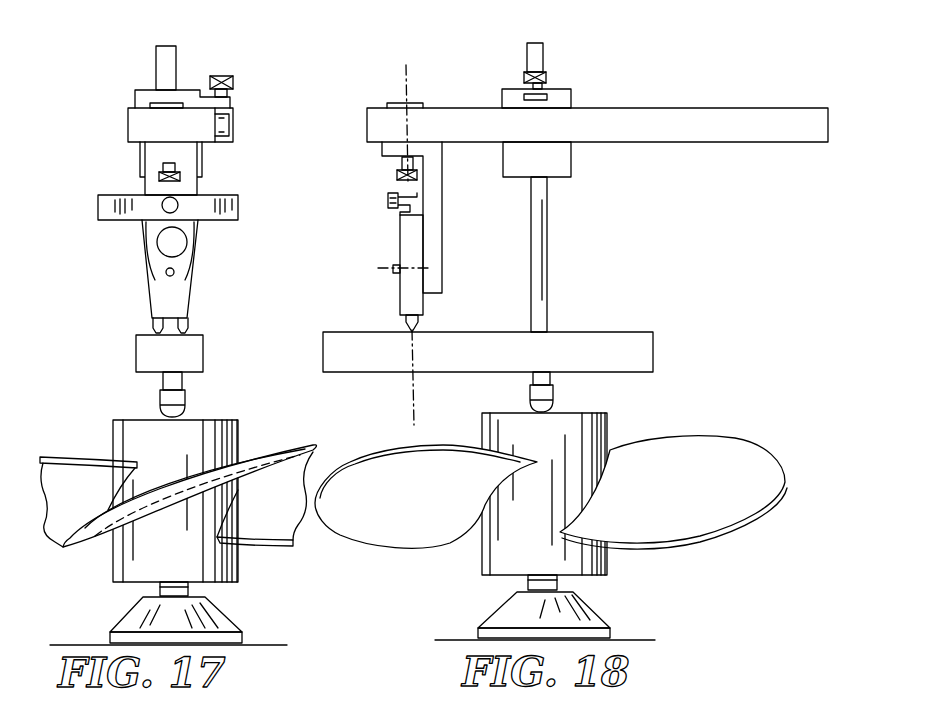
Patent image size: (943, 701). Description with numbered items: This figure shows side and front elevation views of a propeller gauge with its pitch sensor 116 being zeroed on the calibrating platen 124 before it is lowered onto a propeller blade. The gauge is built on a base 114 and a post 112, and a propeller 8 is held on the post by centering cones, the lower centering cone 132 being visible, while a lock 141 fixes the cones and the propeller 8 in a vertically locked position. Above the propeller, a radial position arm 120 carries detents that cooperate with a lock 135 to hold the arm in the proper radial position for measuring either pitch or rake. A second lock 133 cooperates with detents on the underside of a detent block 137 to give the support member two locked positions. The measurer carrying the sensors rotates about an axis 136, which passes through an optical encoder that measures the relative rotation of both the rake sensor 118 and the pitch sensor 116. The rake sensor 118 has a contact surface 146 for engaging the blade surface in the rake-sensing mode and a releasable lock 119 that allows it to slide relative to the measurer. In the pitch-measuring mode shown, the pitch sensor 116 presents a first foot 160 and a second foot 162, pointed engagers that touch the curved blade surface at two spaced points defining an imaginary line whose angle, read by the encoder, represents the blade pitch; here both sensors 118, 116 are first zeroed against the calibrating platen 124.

In FIG. 17, the propeller 8 is at (60, 450).
In FIG. 18, the propeller 8 is at (760, 444).
In FIG. 17, the post 112 is at (170, 57).
In FIG. 18, the post 112 is at (540, 55).
In FIG. 17, the base 114 is at (215, 628).
In FIG. 18, the base 114 is at (512, 624).
In FIG. 17, the pitch sensor 116 is at (195, 313).
In FIG. 18, the pitch sensor 116 is at (426, 327).
In FIG. 17, the rake sensor 118 is at (250, 208).
In FIG. 17, the releasable lock 119 is at (165, 210).
In FIG. 18, the releasable lock 119 is at (391, 207).
In FIG. 18, the radial position arm 120 is at (707, 120).
In FIG. 17, the calibrating platen 124 is at (160, 357).
In FIG. 18, the calibrating platen 124 is at (648, 356).
In FIG. 17, the centering cone 132 is at (192, 590).
In FIG. 18, the centering cone 132 is at (557, 582).
In FIG. 17, the second lock 133 is at (181, 178).
In FIG. 18, the second lock 133 is at (397, 175).
In FIG. 17, the lock 135 is at (222, 78).
In FIG. 18, the lock 135 is at (548, 80).
In FIG. 17, the axis 136 is at (176, 272).
In FIG. 18, the axis 136 is at (380, 268).
In FIG. 17, the detent block 137 is at (152, 128).
In FIG. 17, the lock 141 is at (178, 400).
In FIG. 18, the lock 141 is at (550, 400).
In FIG. 17, the contact surface 146 is at (110, 197).
In FIG. 17, the first foot 160 is at (155, 322).
In FIG. 17, the second foot 162 is at (190, 324).